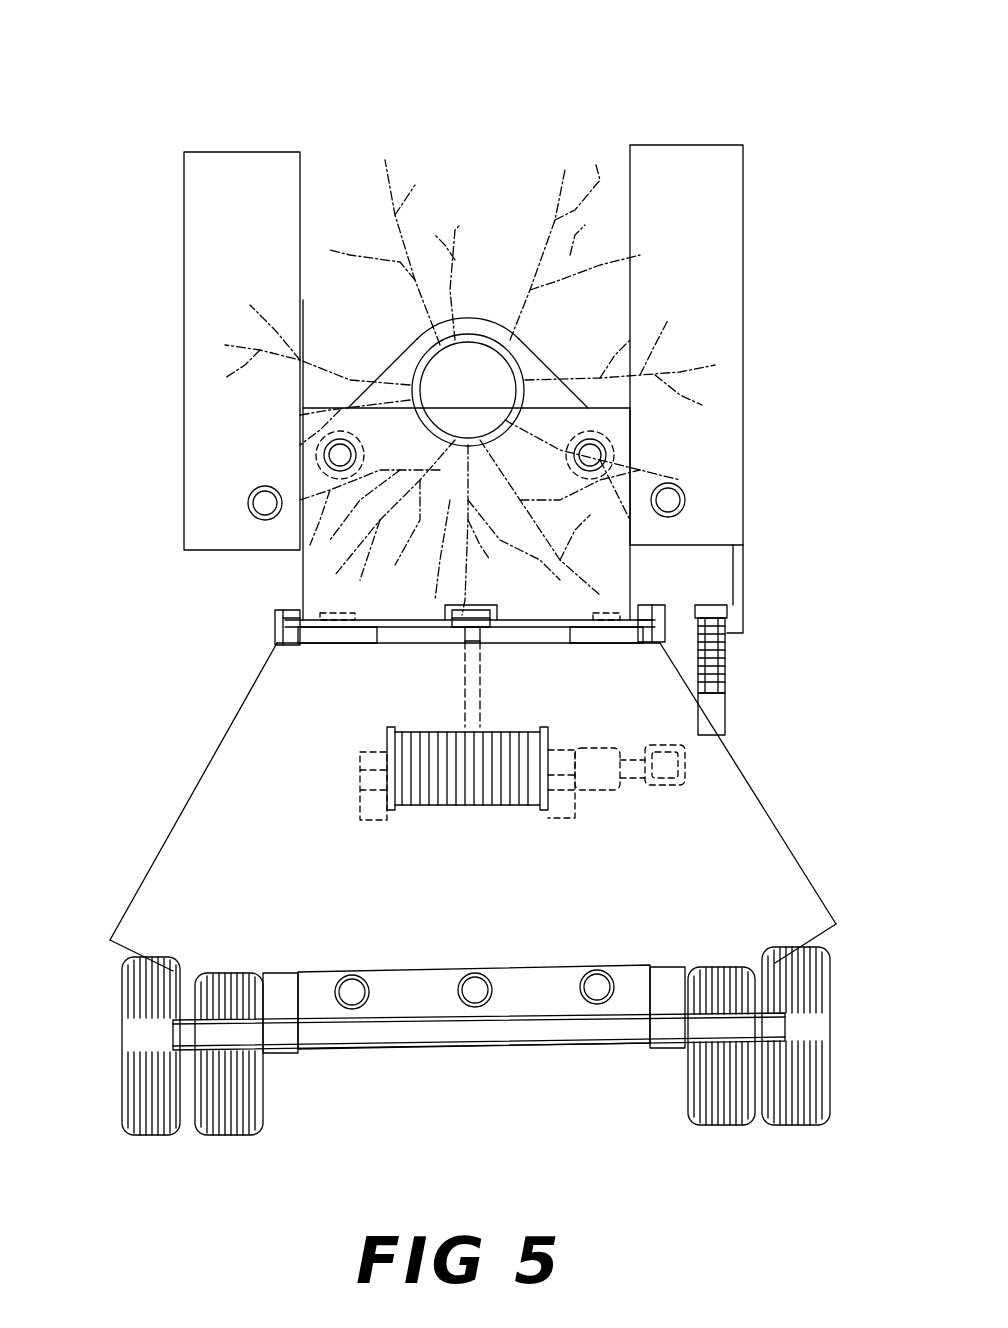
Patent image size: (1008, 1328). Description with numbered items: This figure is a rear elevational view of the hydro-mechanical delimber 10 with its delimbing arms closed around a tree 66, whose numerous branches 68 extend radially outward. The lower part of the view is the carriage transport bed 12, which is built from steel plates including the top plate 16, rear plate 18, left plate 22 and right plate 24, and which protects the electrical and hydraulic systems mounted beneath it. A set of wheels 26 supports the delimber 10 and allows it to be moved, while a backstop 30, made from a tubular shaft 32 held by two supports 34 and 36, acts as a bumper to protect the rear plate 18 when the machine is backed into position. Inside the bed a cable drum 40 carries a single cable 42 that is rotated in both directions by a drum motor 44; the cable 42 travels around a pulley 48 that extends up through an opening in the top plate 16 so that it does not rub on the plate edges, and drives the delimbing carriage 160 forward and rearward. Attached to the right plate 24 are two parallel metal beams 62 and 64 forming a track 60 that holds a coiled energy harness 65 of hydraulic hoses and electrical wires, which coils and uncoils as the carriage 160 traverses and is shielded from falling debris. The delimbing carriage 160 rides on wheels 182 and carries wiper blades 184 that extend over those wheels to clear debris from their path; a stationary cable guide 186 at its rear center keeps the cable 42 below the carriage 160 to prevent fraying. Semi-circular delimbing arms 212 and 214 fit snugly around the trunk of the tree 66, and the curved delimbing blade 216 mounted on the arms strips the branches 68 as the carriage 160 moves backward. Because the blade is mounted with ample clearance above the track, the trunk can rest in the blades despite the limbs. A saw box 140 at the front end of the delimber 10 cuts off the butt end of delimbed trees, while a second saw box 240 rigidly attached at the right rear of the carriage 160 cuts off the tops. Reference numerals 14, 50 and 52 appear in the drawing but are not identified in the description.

The hydro-mechanical delimber 10 is at (343, 52).
The carriage transport bed 12 is at (212, 735).
The frame 14 is at (432, 972).
The top plate 16 is at (380, 620).
The rear plate 18 is at (425, 900).
The left plate 22 is at (172, 822).
The right plate 24 is at (763, 806).
The wheels 26 is at (124, 1103).
The backstop 30 is at (370, 1055).
The tubular shaft 32 is at (540, 1040).
The support 34 is at (283, 1053).
The support 36 is at (668, 1048).
The cable drum 40 is at (495, 806).
The cable 42 is at (467, 642).
The drum motor 44 is at (610, 790).
The pulley 48 is at (483, 708).
The left mounting bracket 50 is at (288, 610).
The right mounting bracket 52 is at (648, 605).
The track 60 is at (735, 646).
The metal beam 62 is at (725, 605).
The metal beam 64 is at (728, 726).
The coiled energy harness 65 is at (712, 665).
The tree 66 is at (468, 390).
The branches 68 is at (598, 180).
The saw box 140 is at (212, 150).
The delimbing carriage 160 is at (514, 250).
The wheels 182 is at (335, 643).
The wiper blades 184 is at (365, 643).
The cable guide 186 is at (460, 605).
The delimbing arm 212 is at (400, 335).
The delimbing arm 214 is at (528, 342).
The delimbing blade 216 is at (490, 320).
The saw box 240 is at (714, 146).